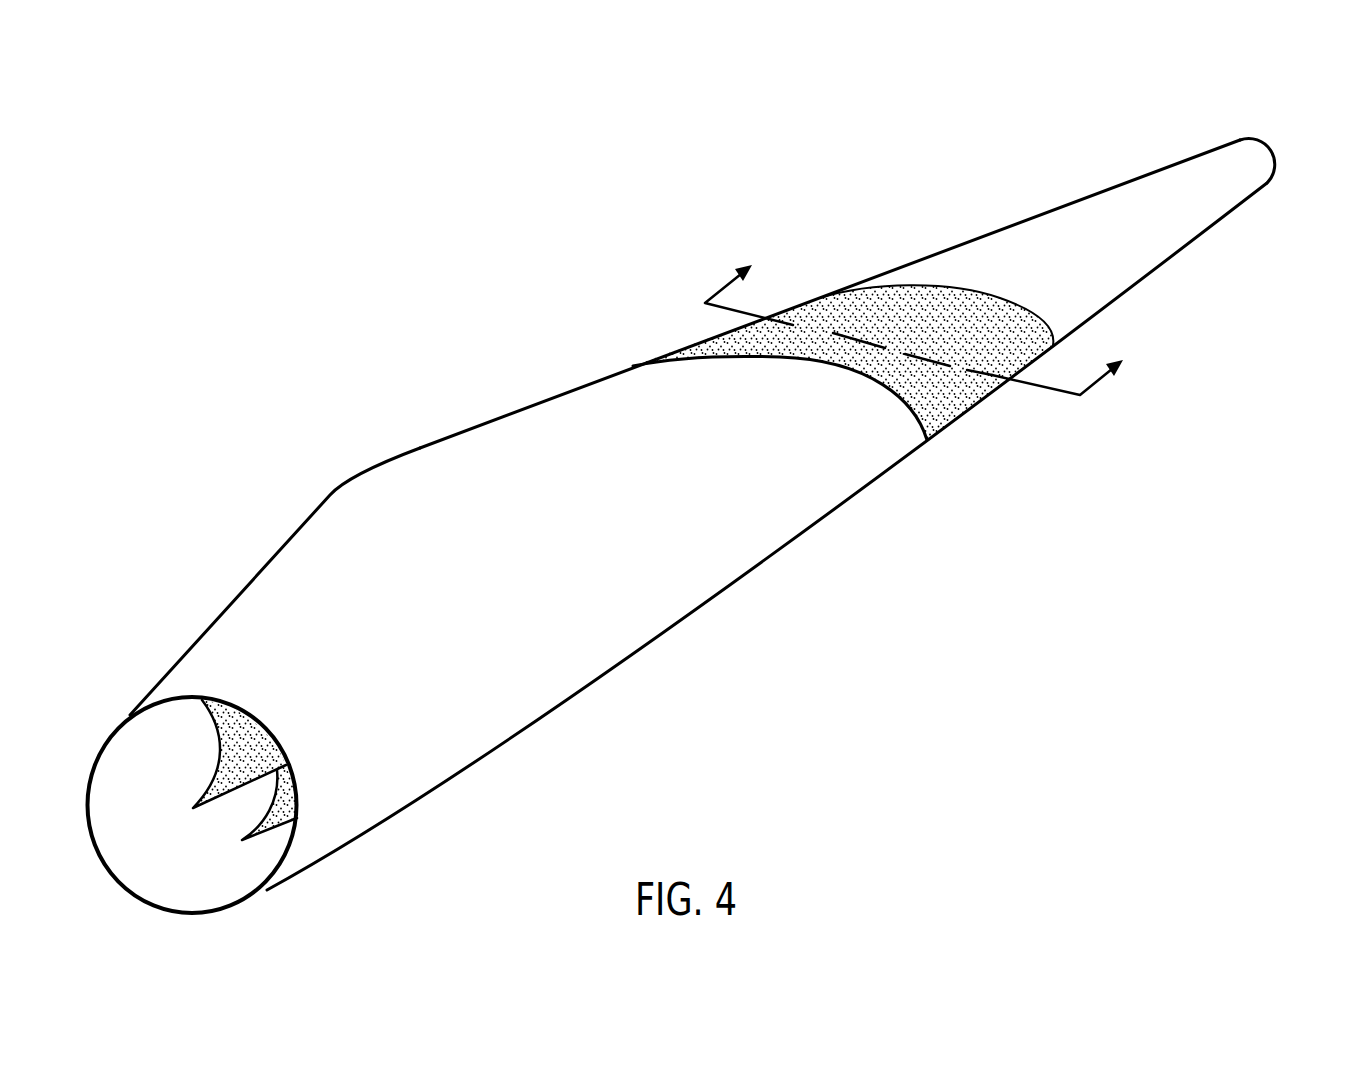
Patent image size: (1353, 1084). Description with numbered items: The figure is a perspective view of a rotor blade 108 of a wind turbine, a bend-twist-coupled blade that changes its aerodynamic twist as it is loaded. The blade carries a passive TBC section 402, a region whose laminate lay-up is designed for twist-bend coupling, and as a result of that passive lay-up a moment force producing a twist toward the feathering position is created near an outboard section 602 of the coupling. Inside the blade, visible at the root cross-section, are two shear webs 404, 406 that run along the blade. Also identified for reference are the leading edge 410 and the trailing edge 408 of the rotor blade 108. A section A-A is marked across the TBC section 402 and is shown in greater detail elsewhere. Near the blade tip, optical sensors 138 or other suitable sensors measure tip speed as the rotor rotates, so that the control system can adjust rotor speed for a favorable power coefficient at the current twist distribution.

The rotor blade 108 is at (503, 393).
The optical sensors 138 is at (1271, 146).
The passive TBC section 402 is at (820, 297).
The shear web 404 is at (212, 779).
The shear web 406 is at (263, 818).
The trailing edge 408 is at (378, 463).
The leading edge 410 is at (606, 675).
The outboard section 602 is at (963, 285).